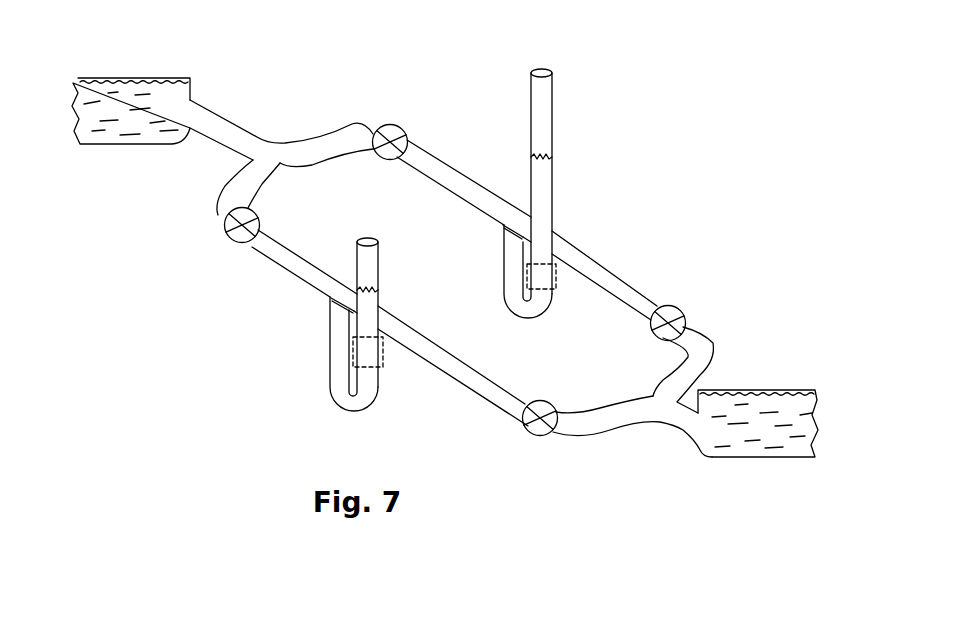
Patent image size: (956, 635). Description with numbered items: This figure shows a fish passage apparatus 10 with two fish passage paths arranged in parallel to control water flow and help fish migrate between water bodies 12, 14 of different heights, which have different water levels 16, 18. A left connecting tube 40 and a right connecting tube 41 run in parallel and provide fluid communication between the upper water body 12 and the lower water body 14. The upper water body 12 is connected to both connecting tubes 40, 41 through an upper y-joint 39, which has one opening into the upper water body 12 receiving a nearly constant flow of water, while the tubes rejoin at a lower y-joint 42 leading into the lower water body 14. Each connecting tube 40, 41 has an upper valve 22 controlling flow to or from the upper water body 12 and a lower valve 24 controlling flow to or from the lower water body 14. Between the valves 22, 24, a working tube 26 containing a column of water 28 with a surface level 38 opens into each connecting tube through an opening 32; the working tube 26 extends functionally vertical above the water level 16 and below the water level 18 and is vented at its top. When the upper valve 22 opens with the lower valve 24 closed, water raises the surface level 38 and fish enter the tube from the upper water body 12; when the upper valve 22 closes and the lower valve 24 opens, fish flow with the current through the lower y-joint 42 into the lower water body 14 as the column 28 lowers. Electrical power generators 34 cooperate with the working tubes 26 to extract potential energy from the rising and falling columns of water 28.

The fish passage apparatus 10 is at (482, 118).
The upper water body 12 is at (104, 90).
The lower water body 14 is at (788, 452).
The water level of upper water body 16 is at (167, 78).
The water level of lower water body 18 is at (788, 390).
The upper valve 22 is at (390, 125).
The lower valve 24 is at (669, 306).
The working tube 26 is at (545, 186).
The column of water 28 is at (540, 217).
The opening of the working tube 32 is at (513, 223).
The electrical power generator 34 is at (528, 272).
The surface level of the water column 38 is at (545, 158).
The upper y-joint 39 is at (242, 137).
The left connecting tube 40 is at (428, 166).
The right connecting tube 41 is at (301, 266).
The lower y-joint 42 is at (700, 345).